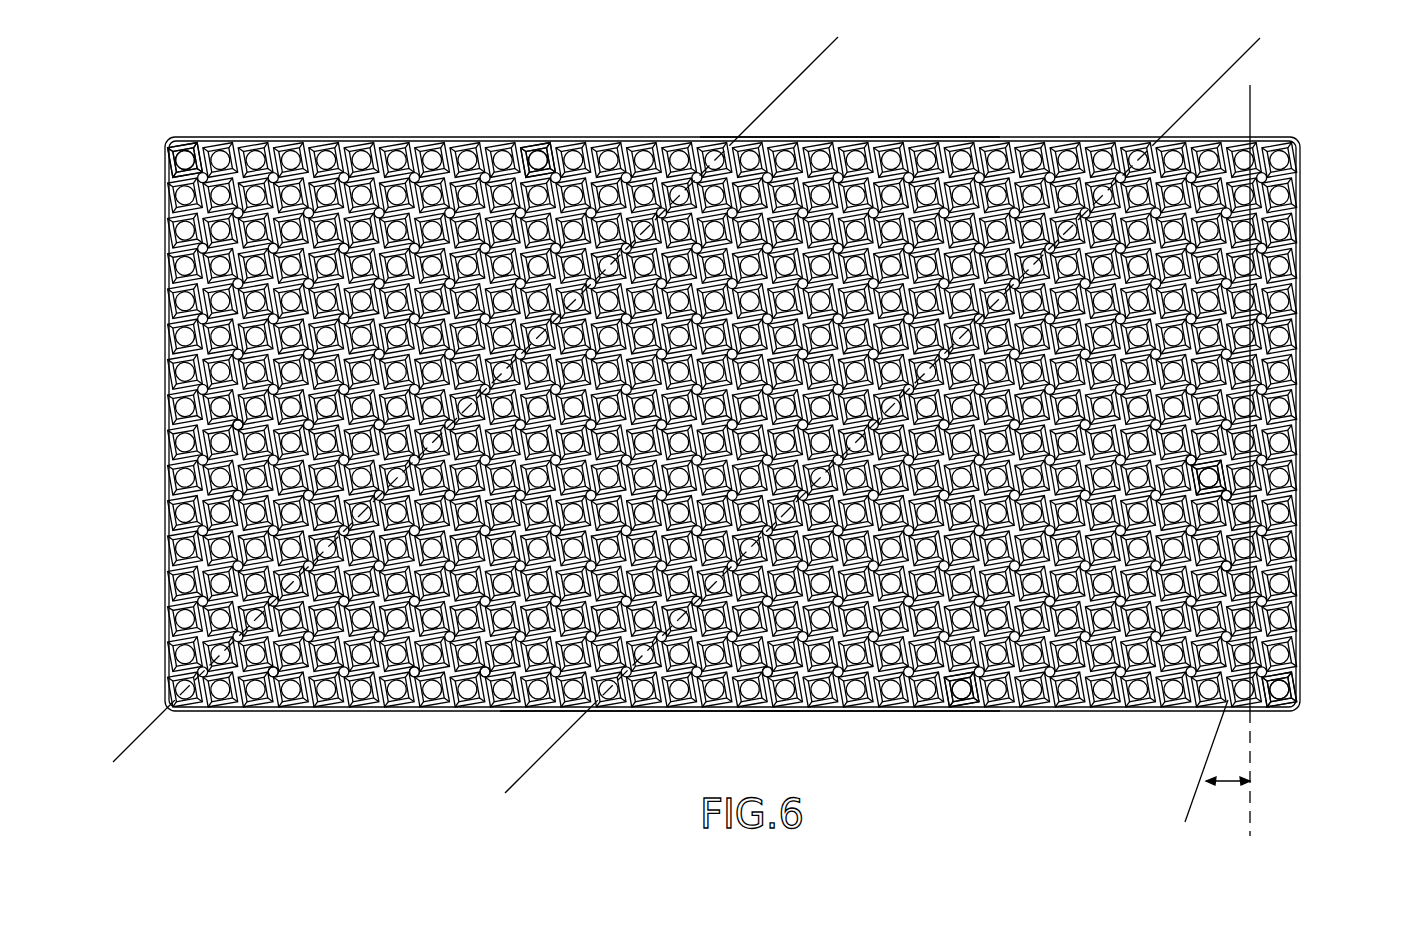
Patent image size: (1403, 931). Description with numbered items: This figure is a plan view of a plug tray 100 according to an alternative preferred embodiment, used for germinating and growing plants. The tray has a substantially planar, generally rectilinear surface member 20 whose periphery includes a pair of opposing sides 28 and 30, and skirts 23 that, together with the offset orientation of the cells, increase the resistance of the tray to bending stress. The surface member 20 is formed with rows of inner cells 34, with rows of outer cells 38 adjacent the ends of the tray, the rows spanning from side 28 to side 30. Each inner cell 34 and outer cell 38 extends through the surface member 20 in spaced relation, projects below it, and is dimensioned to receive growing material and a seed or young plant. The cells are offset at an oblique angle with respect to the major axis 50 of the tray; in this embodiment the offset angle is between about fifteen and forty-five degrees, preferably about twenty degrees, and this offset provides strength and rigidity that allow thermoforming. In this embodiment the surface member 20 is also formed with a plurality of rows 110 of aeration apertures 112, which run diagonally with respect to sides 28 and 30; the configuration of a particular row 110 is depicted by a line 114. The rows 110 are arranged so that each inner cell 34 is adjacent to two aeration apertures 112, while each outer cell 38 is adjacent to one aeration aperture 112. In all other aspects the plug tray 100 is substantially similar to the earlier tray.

The plug tray 100 is at (1312, 157).
The surface member 20 is at (1055, 712).
The side 28 is at (866, 137).
The side 30 is at (651, 712).
The skirt 23 is at (858, 712).
The outer cell 38 is at (187, 157).
The inner cell 34 is at (538, 157).
The aeration aperture 112 is at (234, 426).
The row of aeration apertures 110 is at (270, 677).
The line 114 is at (781, 94).
The major axis 50 is at (1253, 96).